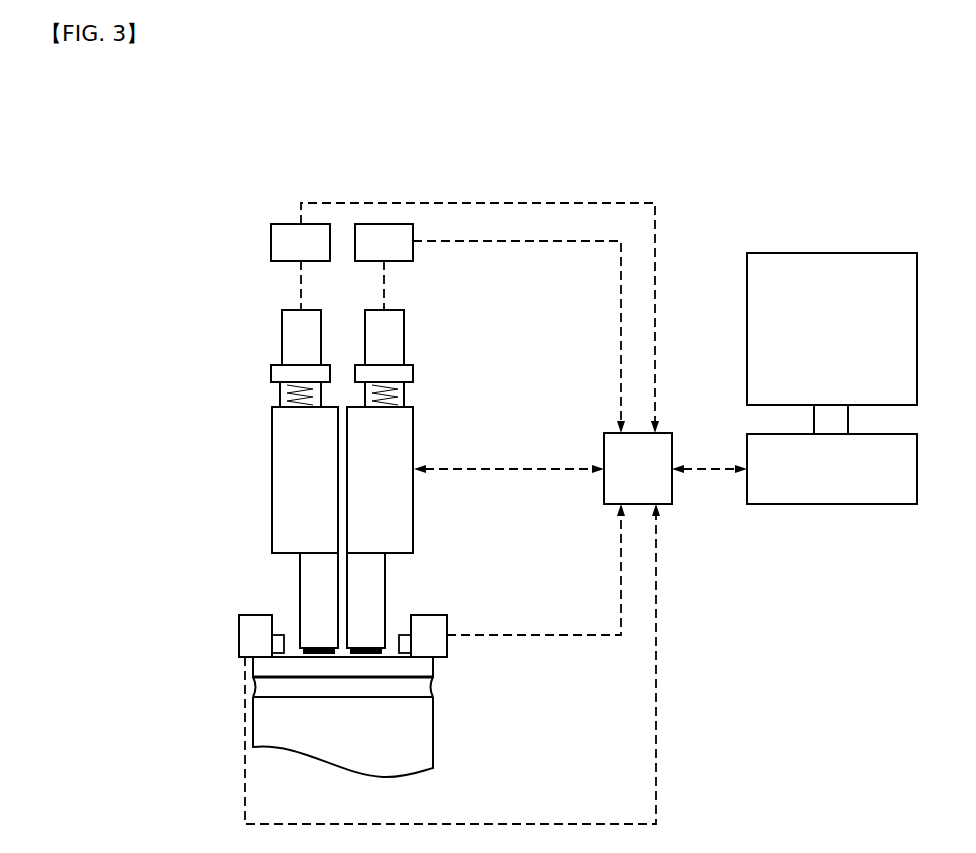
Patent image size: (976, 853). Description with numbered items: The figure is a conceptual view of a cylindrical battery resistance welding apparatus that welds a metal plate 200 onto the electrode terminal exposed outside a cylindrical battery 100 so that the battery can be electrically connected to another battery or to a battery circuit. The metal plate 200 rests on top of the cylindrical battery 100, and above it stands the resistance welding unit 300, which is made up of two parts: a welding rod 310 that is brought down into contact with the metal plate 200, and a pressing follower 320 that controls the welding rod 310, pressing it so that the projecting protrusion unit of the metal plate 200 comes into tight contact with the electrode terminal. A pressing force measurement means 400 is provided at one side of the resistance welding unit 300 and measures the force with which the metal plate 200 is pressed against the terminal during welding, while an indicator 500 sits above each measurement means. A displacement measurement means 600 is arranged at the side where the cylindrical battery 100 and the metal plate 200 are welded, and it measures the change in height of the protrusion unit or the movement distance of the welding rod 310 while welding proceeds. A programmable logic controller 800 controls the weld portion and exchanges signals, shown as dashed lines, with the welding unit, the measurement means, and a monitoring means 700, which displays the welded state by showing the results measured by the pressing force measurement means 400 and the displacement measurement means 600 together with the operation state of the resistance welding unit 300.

The cylindrical battery 100 is at (433, 720).
The metal plate 200 is at (296, 655).
The resistance welding unit 300 is at (289, 530).
The welding rod 310 is at (300, 590).
The pressing follower 320 is at (280, 484).
The pressing force measurement means 400 is at (282, 338).
The indicator 500 is at (290, 228).
The displacement measurement means 600 is at (239, 638).
The monitoring means 700 is at (836, 266).
The programmable logic controller 800 is at (664, 498).